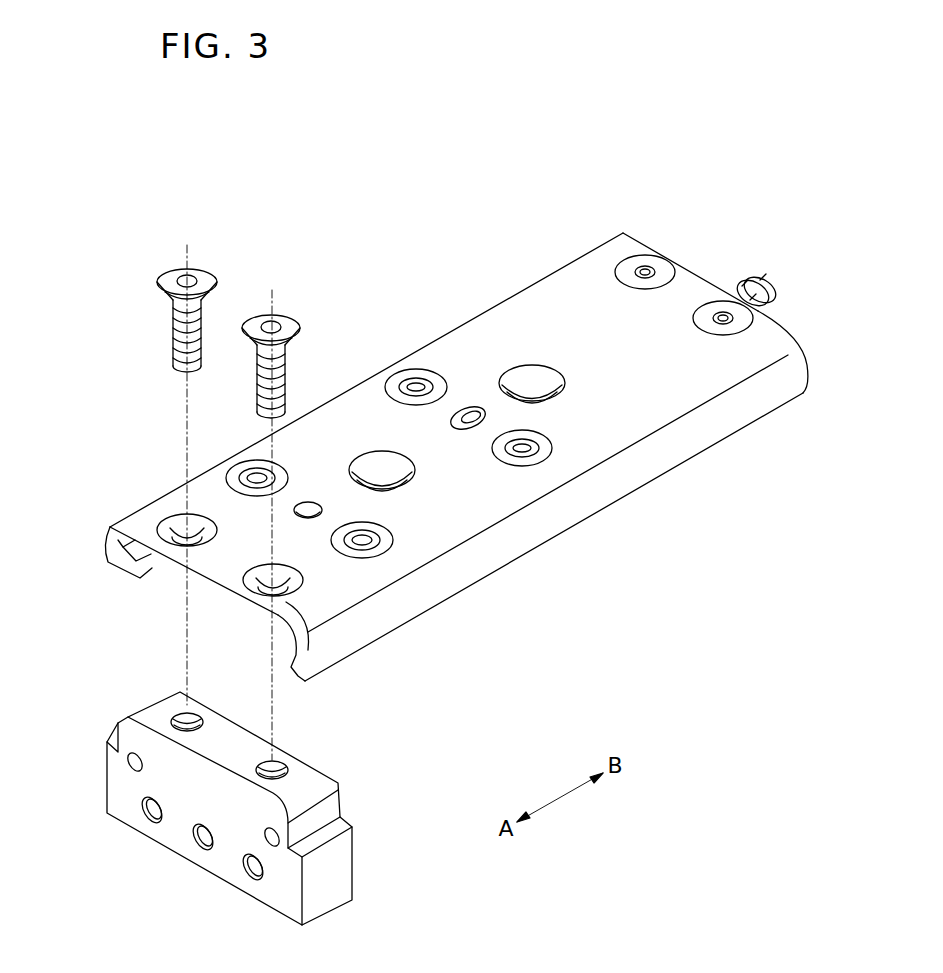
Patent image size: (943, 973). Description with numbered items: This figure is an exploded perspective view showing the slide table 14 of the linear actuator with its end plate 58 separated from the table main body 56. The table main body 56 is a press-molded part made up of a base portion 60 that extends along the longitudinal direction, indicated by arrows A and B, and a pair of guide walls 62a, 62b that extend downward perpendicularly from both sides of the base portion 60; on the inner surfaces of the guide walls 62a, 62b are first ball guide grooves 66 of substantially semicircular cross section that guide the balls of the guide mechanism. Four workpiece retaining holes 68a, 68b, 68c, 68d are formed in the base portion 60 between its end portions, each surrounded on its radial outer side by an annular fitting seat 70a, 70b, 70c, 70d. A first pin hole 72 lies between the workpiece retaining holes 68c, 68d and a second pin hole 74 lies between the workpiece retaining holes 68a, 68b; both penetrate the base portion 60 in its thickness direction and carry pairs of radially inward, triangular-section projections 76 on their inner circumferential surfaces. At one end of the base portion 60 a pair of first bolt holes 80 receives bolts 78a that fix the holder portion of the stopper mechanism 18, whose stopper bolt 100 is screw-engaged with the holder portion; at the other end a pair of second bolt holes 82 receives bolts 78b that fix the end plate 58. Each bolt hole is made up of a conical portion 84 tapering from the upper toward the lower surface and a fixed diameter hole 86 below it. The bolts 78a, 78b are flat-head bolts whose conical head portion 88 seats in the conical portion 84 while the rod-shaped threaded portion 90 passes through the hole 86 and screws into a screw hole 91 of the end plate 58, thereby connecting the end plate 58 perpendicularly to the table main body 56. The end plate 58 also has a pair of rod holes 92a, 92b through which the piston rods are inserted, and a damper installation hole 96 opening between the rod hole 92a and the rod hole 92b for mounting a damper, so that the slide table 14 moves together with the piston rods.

The slide table 14 is at (446, 444).
The stopper mechanism 18 is at (785, 265).
The table main body 56 is at (728, 365).
The end plate 58 is at (229, 809).
The base portion 60 is at (566, 293).
The guide wall 62a is at (108, 552).
The guide wall 62b is at (366, 640).
The first ball guide groove 66 is at (290, 660).
The workpiece retaining hole 68a is at (400, 378).
The workpiece retaining hole 68b is at (542, 440).
The workpiece retaining hole 68c is at (242, 466).
The workpiece retaining hole 68d is at (385, 530).
The fitting seat 70a is at (432, 380).
The fitting seat 70b is at (527, 470).
The fitting seat 70c is at (276, 470).
The fitting seat 70d is at (366, 560).
The first pin hole 72 is at (312, 502).
The second pin hole 74 is at (470, 410).
The projection 76 is at (306, 519).
The bolt 78a is at (708, 300).
The bolt 78b is at (225, 490).
The first bolt hole 80 is at (642, 258).
The second bolt hole 82 is at (167, 517).
The conical portion 84 is at (214, 528).
The fixed diameter hole 86 is at (176, 552).
The head portion 88 is at (160, 282).
The threaded portion 90 is at (173, 340).
The screw hole 91 is at (202, 720).
The rod hole 92a is at (150, 822).
The rod hole 92b is at (251, 882).
The damper installation hole 96 is at (203, 850).
The stopper bolt 100 is at (774, 292).